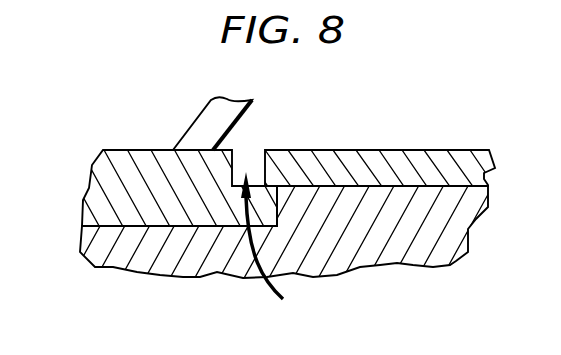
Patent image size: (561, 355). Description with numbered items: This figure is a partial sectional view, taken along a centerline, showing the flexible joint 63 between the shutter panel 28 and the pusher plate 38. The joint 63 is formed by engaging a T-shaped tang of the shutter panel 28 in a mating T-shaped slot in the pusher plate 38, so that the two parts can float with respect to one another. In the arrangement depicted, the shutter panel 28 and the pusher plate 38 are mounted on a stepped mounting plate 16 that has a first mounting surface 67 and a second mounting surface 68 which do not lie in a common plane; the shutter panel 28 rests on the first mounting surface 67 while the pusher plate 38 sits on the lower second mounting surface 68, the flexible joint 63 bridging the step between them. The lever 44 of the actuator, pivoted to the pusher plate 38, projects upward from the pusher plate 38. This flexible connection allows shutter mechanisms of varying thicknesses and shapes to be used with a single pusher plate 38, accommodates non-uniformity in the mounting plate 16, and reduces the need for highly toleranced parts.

The mounting plate 16 is at (360, 270).
The shutter panel 28 is at (443, 149).
The pusher plate 38 is at (122, 213).
The lever 44 is at (203, 125).
The flexible joint 63 is at (275, 251).
The first mounting surface 67 is at (360, 186).
The second mounting surface 68 is at (169, 223).